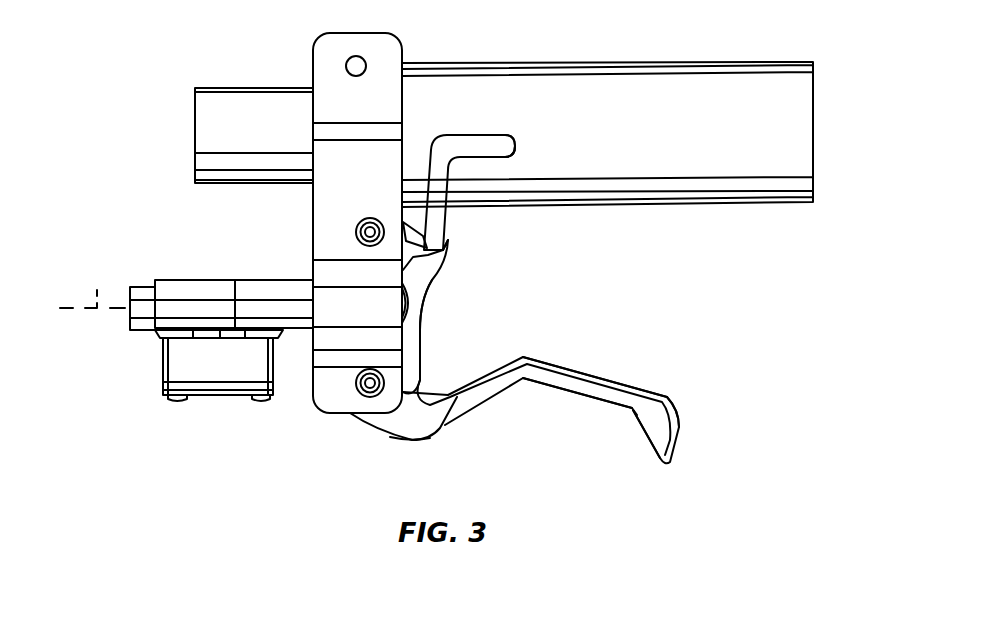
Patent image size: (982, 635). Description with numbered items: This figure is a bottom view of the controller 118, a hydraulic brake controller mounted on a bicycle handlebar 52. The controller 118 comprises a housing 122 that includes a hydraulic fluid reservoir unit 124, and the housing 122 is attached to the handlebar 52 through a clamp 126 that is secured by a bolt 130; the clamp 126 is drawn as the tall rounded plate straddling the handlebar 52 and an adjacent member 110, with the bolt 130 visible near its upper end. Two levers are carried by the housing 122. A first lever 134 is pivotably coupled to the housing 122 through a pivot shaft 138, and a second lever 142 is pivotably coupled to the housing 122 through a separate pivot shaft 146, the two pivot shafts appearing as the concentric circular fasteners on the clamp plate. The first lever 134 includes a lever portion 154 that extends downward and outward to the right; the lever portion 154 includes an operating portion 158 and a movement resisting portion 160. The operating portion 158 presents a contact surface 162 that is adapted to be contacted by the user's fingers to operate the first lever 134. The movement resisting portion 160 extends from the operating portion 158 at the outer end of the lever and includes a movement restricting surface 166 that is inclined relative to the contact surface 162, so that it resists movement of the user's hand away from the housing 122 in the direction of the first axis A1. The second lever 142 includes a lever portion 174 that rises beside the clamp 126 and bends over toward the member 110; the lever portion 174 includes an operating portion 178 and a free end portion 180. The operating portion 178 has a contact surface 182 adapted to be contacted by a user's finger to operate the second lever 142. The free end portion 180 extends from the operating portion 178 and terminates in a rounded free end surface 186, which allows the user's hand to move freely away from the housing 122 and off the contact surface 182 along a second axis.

The first axis A1 is at (88, 283).
The handlebar 52 is at (231, 88).
The rail 110 is at (650, 78).
The controller 118 is at (158, 372).
The housing 122 is at (218, 279).
The hydraulic fluid reservoir unit 124 is at (205, 404).
The clamp 126 is at (312, 52).
The bolt 130 is at (365, 50).
The first lever 134 is at (621, 353).
The pivot shaft 138 is at (368, 392).
The second lever 142 is at (462, 240).
The pivot shaft 146 is at (356, 236).
The lever portion 154 is at (412, 441).
The operating portion 158 is at (553, 370).
The movement resisting portion 160 is at (681, 424).
The contact surface 162 is at (557, 396).
The movement restricting surface 166 is at (640, 436).
The lever portion 174 is at (445, 272).
The operating portion 178 is at (441, 135).
The free end portion 180 is at (500, 135).
The contact surface 182 is at (467, 133).
The free end surface 186 is at (510, 138).